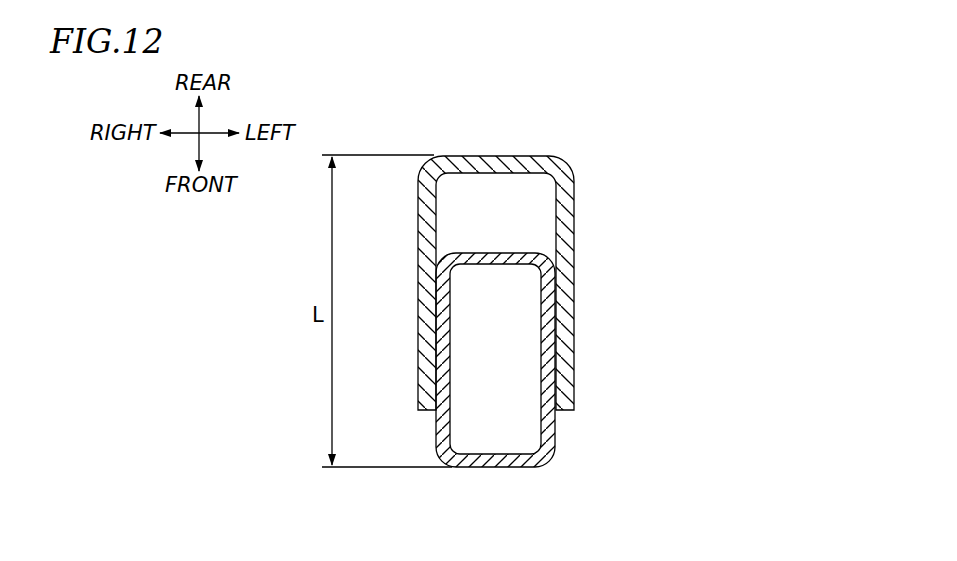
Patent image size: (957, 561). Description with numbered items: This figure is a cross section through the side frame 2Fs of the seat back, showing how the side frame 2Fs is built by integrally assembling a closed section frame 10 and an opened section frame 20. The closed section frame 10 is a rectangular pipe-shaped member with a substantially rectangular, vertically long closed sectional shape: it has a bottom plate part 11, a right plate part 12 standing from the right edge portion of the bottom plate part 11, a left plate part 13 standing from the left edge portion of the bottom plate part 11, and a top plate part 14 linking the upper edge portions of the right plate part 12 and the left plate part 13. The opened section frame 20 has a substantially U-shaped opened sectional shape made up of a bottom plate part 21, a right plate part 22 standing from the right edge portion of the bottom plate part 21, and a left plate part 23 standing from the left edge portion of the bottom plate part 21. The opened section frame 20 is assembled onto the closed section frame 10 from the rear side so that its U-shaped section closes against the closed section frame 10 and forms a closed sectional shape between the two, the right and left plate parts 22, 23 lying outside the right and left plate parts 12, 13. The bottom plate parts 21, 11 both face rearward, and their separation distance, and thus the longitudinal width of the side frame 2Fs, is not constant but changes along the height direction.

The side frame 2Fs is at (568, 148).
The opened section frame 20 is at (568, 202).
The bottom plate part 21 is at (497, 165).
The right plate part 22 is at (427, 260).
The left plate part 23 is at (565, 250).
The closed section frame 10 is at (553, 427).
The bottom plate part 11 is at (497, 258).
The right plate part 12 is at (440, 337).
The left plate part 13 is at (547, 342).
The top plate part 14 is at (492, 469).